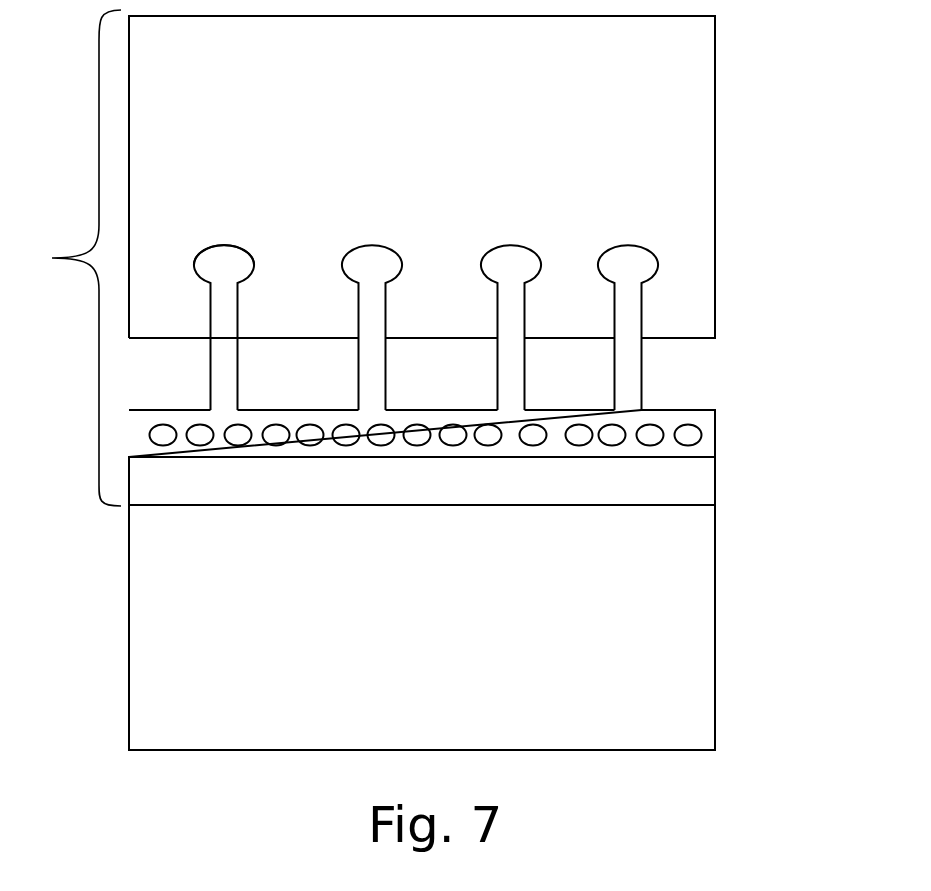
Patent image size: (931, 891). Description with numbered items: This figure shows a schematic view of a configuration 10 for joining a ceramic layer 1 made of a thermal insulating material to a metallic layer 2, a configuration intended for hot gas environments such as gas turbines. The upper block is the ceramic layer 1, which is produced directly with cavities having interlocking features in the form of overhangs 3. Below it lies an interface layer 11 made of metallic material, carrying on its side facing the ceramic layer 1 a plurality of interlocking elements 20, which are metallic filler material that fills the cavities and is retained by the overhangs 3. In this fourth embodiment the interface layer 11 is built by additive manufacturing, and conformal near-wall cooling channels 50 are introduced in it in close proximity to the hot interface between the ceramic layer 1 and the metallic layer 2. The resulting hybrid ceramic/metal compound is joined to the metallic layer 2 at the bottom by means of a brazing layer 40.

The ceramic layer 1 is at (705, 162).
The metallic layer 2 is at (705, 621).
The overhangs 3 is at (642, 262).
The configuration 10 is at (428, 265).
The interface layer 11 is at (705, 425).
The interlocking elements 20 is at (630, 378).
The brazing layer 40 is at (703, 485).
The cooling channels 50 is at (693, 437).